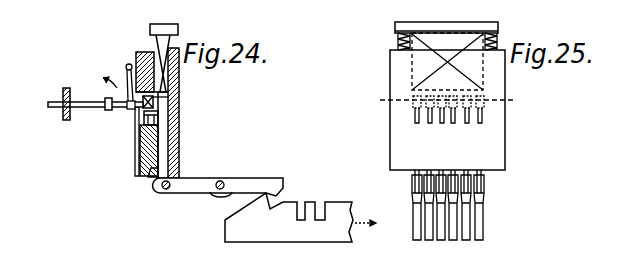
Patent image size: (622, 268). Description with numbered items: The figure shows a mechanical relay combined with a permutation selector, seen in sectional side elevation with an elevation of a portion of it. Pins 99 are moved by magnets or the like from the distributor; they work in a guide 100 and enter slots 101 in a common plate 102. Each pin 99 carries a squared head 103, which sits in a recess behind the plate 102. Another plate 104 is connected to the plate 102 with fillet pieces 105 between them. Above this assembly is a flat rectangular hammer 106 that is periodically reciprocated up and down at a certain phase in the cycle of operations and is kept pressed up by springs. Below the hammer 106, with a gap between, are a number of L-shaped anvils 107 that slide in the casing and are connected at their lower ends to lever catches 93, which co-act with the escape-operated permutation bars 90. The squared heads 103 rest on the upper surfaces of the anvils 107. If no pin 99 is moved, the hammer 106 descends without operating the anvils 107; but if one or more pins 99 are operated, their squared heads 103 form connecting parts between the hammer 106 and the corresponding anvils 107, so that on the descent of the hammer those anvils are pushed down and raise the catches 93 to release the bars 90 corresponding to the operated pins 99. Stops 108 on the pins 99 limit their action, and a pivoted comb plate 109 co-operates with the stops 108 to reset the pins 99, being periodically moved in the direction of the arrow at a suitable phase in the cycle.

In FIG. 24, the permutation bars 90 is at (337, 210).
In FIG. 24, the pivoted catch 93 is at (246, 186).
In FIG. 24, the pins 99 is at (50, 102).
In FIG. 25, the pins 99 is at (436, 103).
In FIG. 24, the guide 100 is at (67, 88).
In FIG. 24, the slots 101 is at (140, 113).
In FIG. 25, the slots 101 is at (417, 110).
In FIG. 24, the common plate 102 is at (140, 158).
In FIG. 25, the common plate 102 is at (492, 140).
In FIG. 24, the squared head 103 is at (154, 102).
In FIG. 25, the squared head 103 is at (477, 107).
In FIG. 24, the plate 104 is at (163, 88).
In FIG. 24, the fillet pieces 105 is at (151, 52).
In FIG. 24, the hammer 106 is at (176, 75).
In FIG. 25, the hammer 106 is at (403, 45).
In FIG. 24, the anvils 107 is at (163, 143).
In FIG. 24, the stops 108 is at (106, 110).
In FIG. 24, the pivoted comb plate 109 is at (127, 88).